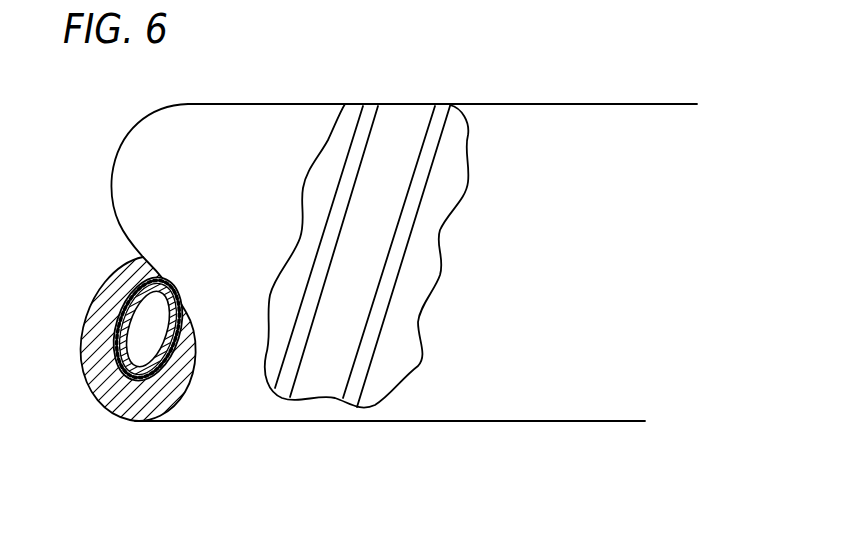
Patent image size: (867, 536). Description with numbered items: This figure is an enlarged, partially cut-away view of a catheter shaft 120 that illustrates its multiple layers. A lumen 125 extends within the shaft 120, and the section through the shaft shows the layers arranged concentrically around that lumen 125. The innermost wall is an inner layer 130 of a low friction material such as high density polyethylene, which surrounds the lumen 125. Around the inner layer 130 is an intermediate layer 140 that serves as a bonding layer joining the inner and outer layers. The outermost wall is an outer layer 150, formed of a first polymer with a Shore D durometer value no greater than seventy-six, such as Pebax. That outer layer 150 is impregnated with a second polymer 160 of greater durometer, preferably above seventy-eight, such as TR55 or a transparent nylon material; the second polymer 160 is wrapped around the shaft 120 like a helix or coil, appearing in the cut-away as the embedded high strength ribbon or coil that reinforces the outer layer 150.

The catheter shaft 120 is at (592, 103).
The second polymer 160 is at (372, 112).
The outer layer 150 is at (165, 394).
The intermediate layer 140 is at (122, 300).
The inner layer 130 is at (125, 382).
The lumen 125 is at (150, 340).